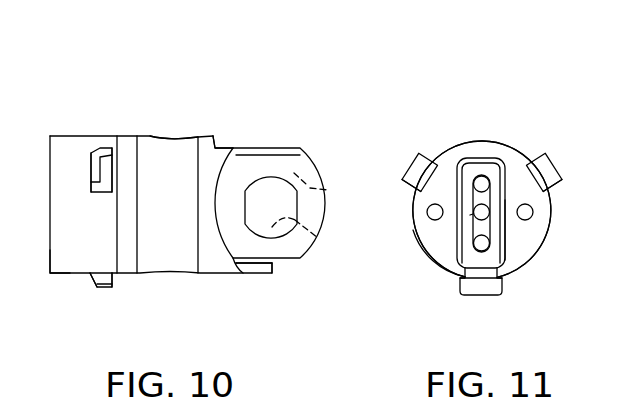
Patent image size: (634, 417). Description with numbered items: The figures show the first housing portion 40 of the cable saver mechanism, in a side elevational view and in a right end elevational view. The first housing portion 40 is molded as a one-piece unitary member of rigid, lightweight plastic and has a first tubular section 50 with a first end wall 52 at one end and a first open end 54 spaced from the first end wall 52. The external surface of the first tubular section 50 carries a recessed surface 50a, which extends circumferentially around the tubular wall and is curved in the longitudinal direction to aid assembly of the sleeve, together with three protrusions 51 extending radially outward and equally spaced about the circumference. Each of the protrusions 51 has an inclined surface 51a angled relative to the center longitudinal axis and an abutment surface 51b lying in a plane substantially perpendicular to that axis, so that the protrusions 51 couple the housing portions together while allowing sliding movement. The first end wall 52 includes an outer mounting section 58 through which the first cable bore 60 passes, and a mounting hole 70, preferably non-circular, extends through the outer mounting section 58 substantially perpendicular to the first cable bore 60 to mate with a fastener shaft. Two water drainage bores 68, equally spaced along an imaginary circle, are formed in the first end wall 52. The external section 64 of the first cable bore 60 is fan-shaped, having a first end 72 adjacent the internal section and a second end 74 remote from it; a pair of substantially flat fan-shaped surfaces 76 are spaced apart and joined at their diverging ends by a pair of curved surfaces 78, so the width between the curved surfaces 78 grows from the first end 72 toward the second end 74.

In FIG. 10, the first housing portion 40 is at (203, 113).
In FIG. 11, the first housing portion 40 is at (496, 122).
In FIG. 10, the first tubular section 50 is at (88, 136).
In FIG. 10, the recessed surface 50a is at (170, 137).
In FIG. 10, the protrusions 51 is at (105, 147).
In FIG. 11, the protrusions 51 is at (410, 154).
In FIG. 10, the inclined surface 51a is at (97, 172).
In FIG. 10, the abutment surface 51b is at (113, 172).
In FIG. 11, the abutment surface 51b is at (407, 191).
In FIG. 10, the first end wall 52 is at (219, 146).
In FIG. 11, the first end wall 52 is at (433, 246).
In FIG. 10, the first open end 54 is at (50, 262).
In FIG. 10, the outer mounting section 58 is at (277, 266).
In FIG. 11, the outer mounting section 58 is at (503, 240).
In FIG. 11, the first cable bore 60 is at (466, 220).
In FIG. 10, the external section 64 is at (323, 188).
In FIG. 11, the external section 64 is at (466, 158).
In FIG. 11, the water drainage bores 68 is at (430, 215).
In FIG. 10, the mounting hole 70 is at (272, 179).
In FIG. 10, the first end 72 is at (272, 226).
In FIG. 10, the second end 74 is at (318, 238).
In FIG. 11, the flat fan-shaped surfaces 76 is at (460, 222).
In FIG. 10, the curved surfaces 78 is at (294, 173).
In FIG. 11, the curved surfaces 78 is at (489, 178).